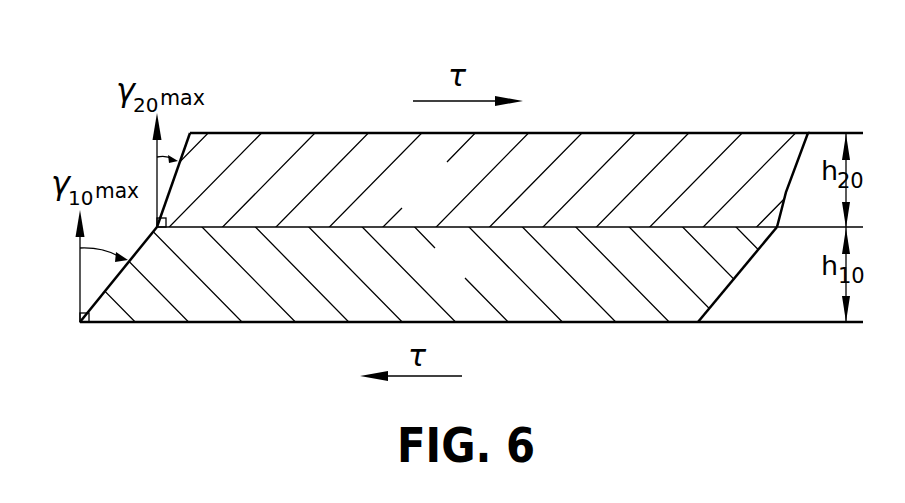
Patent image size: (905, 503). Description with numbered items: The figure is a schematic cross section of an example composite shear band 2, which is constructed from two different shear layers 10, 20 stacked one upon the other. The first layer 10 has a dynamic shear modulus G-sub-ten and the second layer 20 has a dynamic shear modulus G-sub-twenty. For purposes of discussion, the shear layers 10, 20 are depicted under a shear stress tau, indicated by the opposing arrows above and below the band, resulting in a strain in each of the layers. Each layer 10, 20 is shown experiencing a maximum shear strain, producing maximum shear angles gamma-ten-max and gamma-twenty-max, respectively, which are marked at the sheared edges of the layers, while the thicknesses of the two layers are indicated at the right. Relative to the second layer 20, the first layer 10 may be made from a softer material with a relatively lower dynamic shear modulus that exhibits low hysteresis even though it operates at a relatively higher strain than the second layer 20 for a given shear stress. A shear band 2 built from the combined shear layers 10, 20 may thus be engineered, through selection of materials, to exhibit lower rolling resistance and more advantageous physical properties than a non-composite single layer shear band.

The shear band 2 is at (447, 173).
The first layer 10 is at (473, 278).
The second layer 20 is at (448, 191).